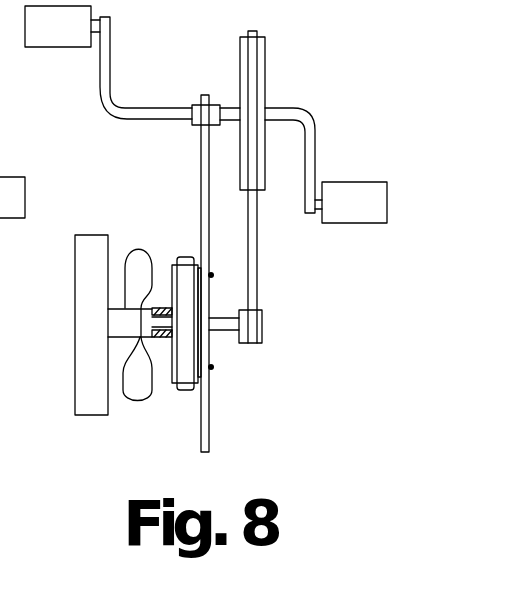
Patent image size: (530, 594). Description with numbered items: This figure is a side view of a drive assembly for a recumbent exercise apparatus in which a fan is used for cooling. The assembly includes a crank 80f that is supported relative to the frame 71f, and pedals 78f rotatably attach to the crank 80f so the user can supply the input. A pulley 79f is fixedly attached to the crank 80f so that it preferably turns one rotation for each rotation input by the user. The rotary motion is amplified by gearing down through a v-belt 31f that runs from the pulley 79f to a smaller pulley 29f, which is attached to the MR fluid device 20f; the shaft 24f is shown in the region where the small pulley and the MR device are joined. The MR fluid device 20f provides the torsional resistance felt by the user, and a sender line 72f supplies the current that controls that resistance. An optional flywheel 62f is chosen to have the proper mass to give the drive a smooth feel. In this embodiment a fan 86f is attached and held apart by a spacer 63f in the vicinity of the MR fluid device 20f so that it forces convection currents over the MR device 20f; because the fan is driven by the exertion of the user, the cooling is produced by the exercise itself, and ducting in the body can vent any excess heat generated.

The MR fluid device 20f is at (185, 258).
The shaft 24f is at (225, 328).
The smaller pulley 29f is at (260, 323).
The v-belt 31f is at (252, 248).
The flywheel 62f is at (80, 262).
The spacer 63f is at (160, 345).
The frame 71f is at (209, 418).
The sender line 72f is at (185, 390).
The pedals 78f is at (345, 183).
The pulley 79f is at (262, 63).
The crank 80f is at (308, 120).
The fan 86f is at (142, 393).